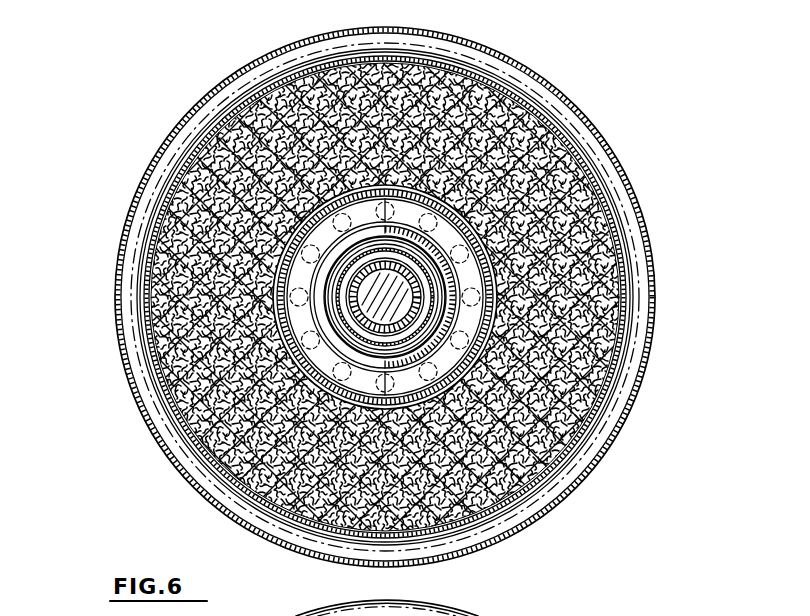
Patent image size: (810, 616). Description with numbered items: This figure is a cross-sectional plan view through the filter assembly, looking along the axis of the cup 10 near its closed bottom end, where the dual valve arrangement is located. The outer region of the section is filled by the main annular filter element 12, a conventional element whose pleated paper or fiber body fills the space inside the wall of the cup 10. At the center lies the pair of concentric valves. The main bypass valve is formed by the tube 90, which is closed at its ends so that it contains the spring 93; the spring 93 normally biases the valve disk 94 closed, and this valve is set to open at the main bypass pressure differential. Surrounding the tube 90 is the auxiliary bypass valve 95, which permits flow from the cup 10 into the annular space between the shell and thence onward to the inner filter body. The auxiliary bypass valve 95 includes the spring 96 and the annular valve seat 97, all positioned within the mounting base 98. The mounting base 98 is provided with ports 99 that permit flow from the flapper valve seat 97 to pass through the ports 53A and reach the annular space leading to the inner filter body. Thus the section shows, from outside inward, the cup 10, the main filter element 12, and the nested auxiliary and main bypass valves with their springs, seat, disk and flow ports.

The cup 10 is at (136, 193).
The main annular filter element 12 is at (160, 404).
The ports 53A is at (257, 94).
The tube 90 is at (334, 284).
The spring 93 is at (342, 308).
The valve disk 94 is at (505, 440).
The auxiliary bypass valve 95 is at (368, 250).
The spring 96 is at (203, 112).
The annular valve seat 97 is at (342, 284).
The mounting base 98 is at (480, 278).
The ports 99 is at (463, 340).